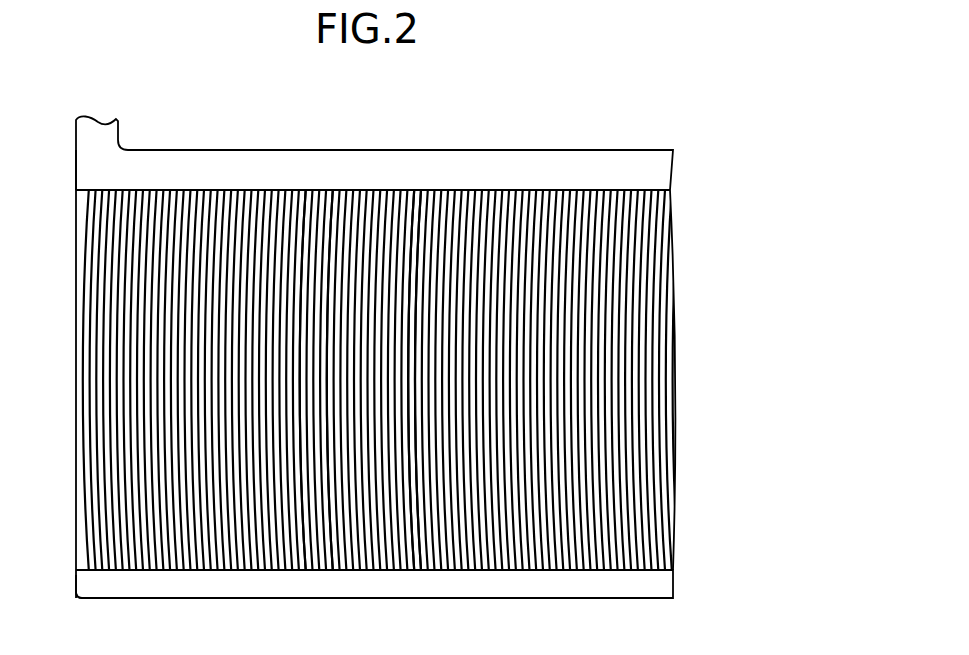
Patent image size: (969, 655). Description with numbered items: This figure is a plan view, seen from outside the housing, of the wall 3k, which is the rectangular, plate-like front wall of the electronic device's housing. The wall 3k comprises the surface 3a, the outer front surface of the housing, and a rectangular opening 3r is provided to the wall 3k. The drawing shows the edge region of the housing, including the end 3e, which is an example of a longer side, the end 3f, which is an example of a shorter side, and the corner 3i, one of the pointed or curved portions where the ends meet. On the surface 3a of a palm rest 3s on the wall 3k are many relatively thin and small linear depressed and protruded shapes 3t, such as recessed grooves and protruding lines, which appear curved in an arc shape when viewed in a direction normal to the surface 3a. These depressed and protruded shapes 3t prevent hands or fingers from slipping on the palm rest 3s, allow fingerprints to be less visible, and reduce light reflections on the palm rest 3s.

The wall 3k is at (518, 126).
The palm rest 3s is at (640, 373).
The surface 3a is at (412, 508).
The depressed and protruded shapes 3t is at (333, 203).
The end 3f is at (76, 168).
The corner 3i is at (80, 597).
The rectangular opening 3r is at (628, 150).
The end 3e is at (627, 599).